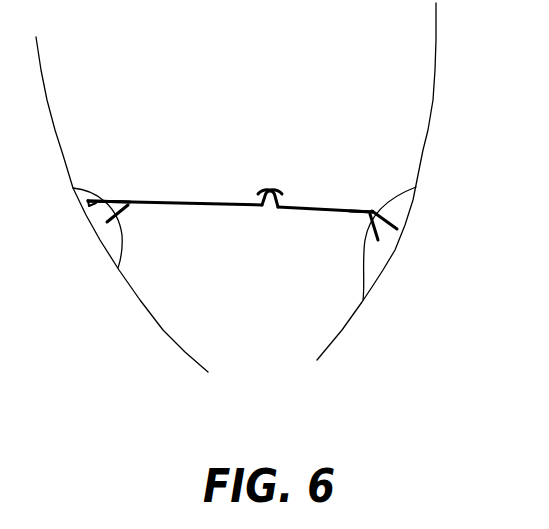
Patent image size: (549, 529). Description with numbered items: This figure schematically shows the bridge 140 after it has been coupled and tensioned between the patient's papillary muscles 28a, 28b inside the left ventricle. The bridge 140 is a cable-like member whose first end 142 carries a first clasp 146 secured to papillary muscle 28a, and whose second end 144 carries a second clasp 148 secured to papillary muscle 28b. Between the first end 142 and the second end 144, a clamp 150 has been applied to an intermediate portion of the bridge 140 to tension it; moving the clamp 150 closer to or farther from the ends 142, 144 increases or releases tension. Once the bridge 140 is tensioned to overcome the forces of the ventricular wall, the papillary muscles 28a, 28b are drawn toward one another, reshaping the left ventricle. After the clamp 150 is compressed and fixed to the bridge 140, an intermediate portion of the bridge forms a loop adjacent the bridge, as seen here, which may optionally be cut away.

The papillary muscle 28a is at (105, 223).
The papillary muscle 28b is at (380, 247).
The bridge 140 is at (203, 207).
The first end 142 is at (113, 197).
The second end 144 is at (370, 210).
The first clasp 146 is at (93, 205).
The second clasp 148 is at (392, 221).
The clamp 150 is at (269, 192).